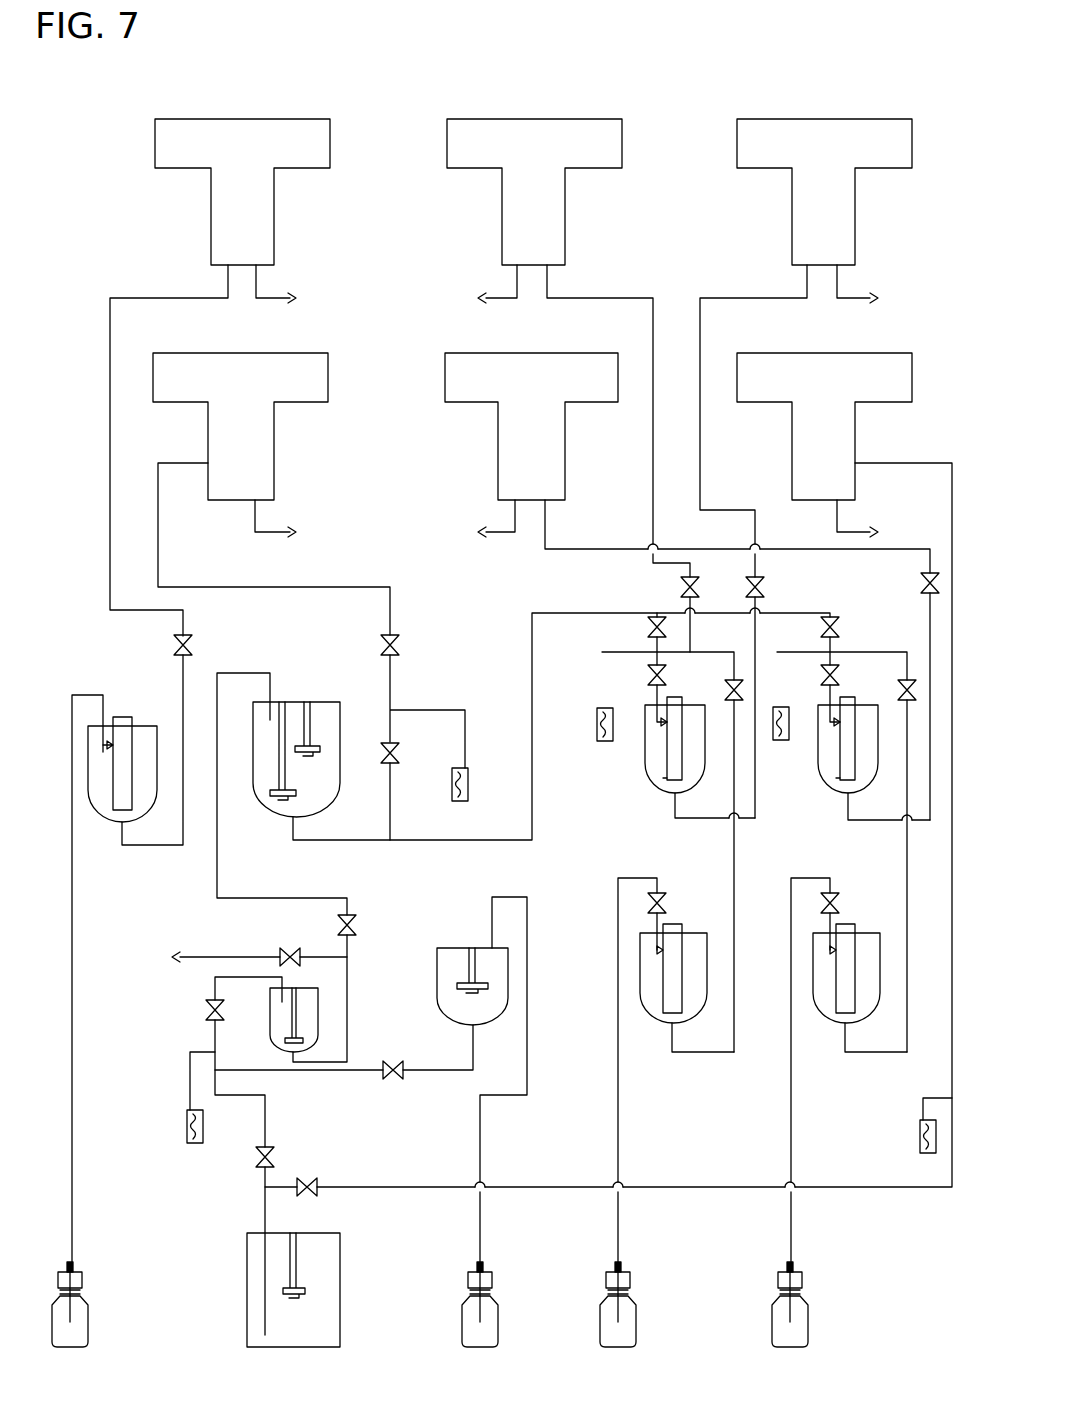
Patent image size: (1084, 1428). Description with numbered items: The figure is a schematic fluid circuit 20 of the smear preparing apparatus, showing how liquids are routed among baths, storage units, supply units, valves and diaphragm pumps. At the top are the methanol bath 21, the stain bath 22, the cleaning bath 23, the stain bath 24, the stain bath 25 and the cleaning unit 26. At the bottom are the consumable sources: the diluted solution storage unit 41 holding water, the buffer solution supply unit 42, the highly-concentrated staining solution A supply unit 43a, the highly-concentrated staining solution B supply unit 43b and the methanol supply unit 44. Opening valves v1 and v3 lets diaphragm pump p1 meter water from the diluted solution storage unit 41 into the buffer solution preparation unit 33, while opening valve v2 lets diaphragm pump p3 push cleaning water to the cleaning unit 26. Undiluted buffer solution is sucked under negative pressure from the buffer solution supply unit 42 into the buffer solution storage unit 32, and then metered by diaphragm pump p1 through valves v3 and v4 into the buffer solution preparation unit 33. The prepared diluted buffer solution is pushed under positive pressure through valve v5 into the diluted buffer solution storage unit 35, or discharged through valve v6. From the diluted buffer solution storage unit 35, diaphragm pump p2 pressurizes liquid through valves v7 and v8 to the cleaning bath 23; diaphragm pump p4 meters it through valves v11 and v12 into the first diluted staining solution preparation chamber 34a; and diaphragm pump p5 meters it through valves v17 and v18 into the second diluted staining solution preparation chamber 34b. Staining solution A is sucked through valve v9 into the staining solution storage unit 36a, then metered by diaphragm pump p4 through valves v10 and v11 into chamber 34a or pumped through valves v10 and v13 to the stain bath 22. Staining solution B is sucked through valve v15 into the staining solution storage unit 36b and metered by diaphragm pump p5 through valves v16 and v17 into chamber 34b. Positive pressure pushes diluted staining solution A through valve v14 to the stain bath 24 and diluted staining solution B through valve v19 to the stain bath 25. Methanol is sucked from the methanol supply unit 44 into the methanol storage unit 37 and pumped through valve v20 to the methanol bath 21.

The liquid processing system 20 is at (724, 102).
The methanol bath 21 is at (326, 119).
The stain bath 22 is at (616, 119).
The cleaning bath 23 is at (326, 353).
The stain bath 24 is at (906, 119).
The stain bath 25 is at (616, 353).
The cleaning unit 26 is at (906, 353).
The buffer solution storage unit 32 is at (450, 948).
The buffer solution preparation unit 33 is at (308, 988).
The first diluted staining solution preparation chamber 34a is at (680, 700).
The second diluted staining solution preparation chamber 34b is at (853, 700).
The diluted buffer solution storage unit 35 is at (328, 702).
The staining solution storage unit 36a is at (680, 933).
The staining solution storage unit 36b is at (853, 933).
The methanol storage unit 37 is at (146, 726).
The diluted solution storage unit 41 is at (330, 1233).
The buffer solution supply unit 42 is at (494, 1300).
The highly-concentrated staining solution A supply unit 43a is at (631, 1300).
The highly-concentrated staining solution B supply unit 43b is at (806, 1300).
The methanol supply unit 44 is at (88, 1300).
The diaphragm pump p1 is at (187, 1126).
The diaphragm pump p2 is at (470, 786).
The diaphragm pump p3 is at (920, 1133).
The diaphragm pump p4 is at (597, 720).
The diaphragm pump p5 is at (781, 742).
The valve v1 is at (274, 1160).
The valve v2 is at (318, 1182).
The valve v3 is at (222, 1004).
The valve v4 is at (392, 1061).
The valve v5 is at (352, 915).
The valve v6 is at (290, 948).
The valve v7 is at (398, 753).
The valve v8 is at (397, 645).
The valve v9 is at (660, 893).
The valve v10 is at (734, 678).
The valve v11 is at (648, 675).
The valve v12 is at (648, 627).
The valve v13 is at (681, 587).
The valve v14 is at (764, 590).
The valve v15 is at (833, 893).
The valve v16 is at (907, 678).
The valve v17 is at (821, 675).
The valve v18 is at (821, 627).
The valve v19 is at (921, 583).
The valve v20 is at (192, 645).